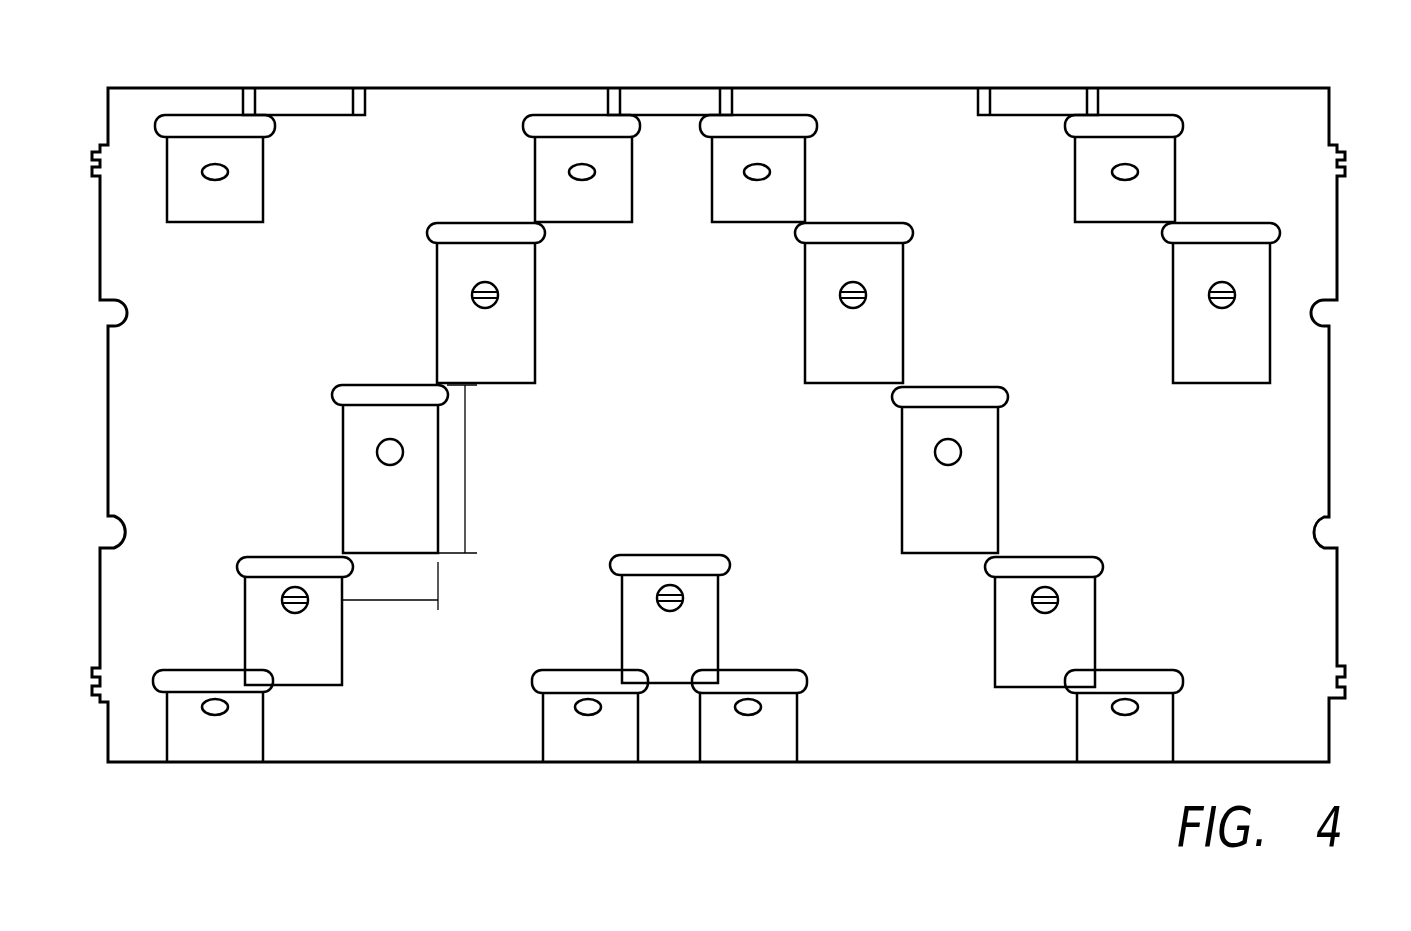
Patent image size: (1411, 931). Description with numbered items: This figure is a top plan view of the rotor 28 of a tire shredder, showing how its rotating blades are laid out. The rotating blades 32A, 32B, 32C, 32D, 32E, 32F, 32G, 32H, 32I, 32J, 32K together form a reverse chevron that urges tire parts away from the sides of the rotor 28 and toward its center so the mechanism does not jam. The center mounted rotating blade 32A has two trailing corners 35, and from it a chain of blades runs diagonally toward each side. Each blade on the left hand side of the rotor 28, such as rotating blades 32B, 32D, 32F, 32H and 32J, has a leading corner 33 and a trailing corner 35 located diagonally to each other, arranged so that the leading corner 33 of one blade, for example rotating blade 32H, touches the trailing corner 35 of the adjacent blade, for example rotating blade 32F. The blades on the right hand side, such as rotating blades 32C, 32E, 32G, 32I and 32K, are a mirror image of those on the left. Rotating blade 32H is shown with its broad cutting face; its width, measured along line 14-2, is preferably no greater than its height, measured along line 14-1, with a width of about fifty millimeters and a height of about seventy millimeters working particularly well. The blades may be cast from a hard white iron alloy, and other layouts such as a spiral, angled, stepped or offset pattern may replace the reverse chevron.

The rotor 28 is at (655, 182).
The rotating blade 32A is at (729, 652).
The rotating blade 32B is at (532, 725).
The rotating blade 32C is at (808, 725).
The rotating blade 32D is at (524, 150).
The rotating blade 32E is at (816, 152).
The rotating blade 32F is at (426, 285).
The rotating blade 32G is at (914, 280).
The rotating blade 32H is at (332, 440).
The rotating blade 32I is at (1009, 447).
The rotating blade 32J is at (234, 622).
The rotating blade 32K is at (1106, 625).
The leading corner 33 is at (530, 230).
The trailing corner 35 is at (437, 383).
The height line of broad cutting face 14-1 is at (465, 520).
The width line of broad cutting face 14-2 is at (398, 600).